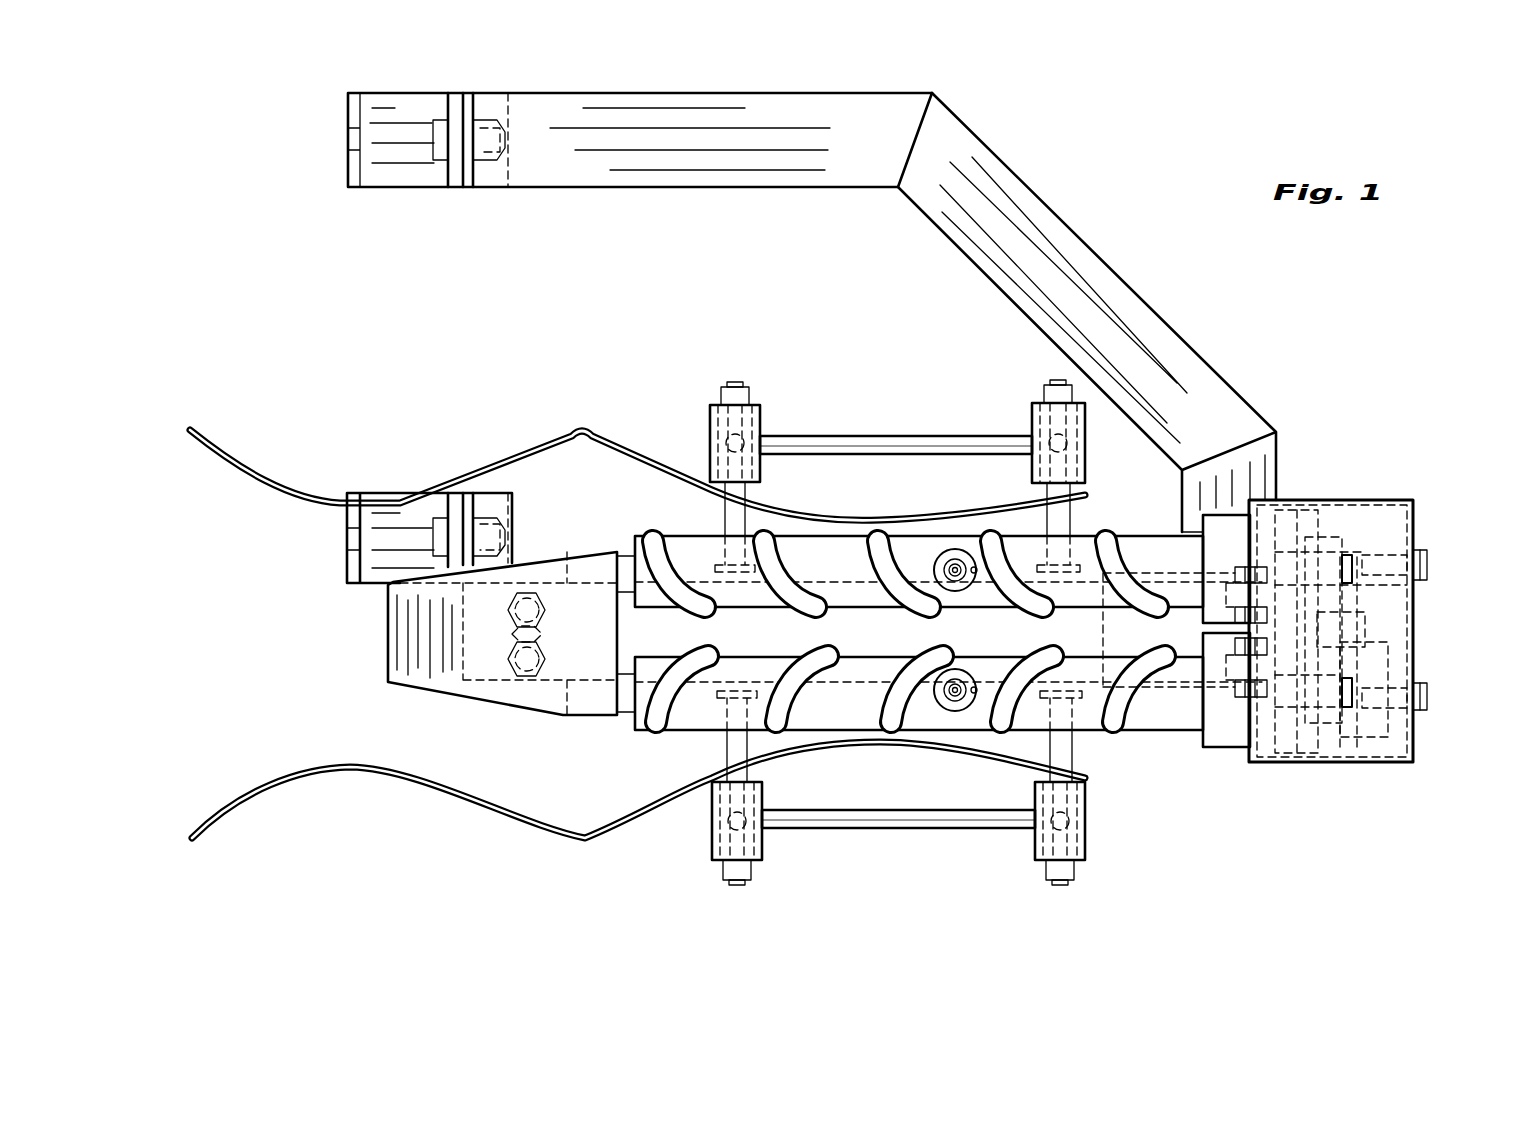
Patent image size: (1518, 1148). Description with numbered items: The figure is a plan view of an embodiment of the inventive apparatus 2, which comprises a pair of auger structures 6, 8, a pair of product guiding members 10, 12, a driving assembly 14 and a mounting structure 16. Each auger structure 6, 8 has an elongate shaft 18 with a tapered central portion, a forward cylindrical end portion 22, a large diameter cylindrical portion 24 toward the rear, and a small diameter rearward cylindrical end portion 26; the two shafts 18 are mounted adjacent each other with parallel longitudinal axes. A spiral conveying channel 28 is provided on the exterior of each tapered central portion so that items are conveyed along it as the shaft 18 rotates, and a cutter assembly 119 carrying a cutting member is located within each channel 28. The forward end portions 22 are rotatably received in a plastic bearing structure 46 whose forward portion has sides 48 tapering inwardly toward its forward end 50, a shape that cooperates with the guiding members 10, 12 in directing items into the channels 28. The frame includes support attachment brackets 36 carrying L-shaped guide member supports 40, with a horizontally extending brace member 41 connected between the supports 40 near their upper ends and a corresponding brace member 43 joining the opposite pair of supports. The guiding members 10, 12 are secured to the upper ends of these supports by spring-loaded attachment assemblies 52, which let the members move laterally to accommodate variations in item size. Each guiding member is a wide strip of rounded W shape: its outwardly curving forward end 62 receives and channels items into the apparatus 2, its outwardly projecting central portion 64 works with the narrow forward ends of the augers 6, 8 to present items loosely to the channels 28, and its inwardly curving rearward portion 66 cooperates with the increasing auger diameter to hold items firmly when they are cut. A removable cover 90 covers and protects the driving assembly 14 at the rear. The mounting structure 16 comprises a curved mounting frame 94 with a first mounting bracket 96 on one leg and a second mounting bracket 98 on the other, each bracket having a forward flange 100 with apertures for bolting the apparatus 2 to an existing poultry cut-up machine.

The inventive apparatus 2 is at (1215, 341).
The auger structure 6 is at (917, 637).
The auger structure 8 is at (700, 738).
The product guiding member 10 is at (266, 487).
The product guiding member 12 is at (352, 772).
The driving assembly 14 is at (1304, 641).
The mounting structure 16 is at (640, 176).
The elongate shaft 18 is at (917, 637).
The forward cylindrical end portion 22 is at (587, 567).
The large diameter cylindrical portion 24 is at (1228, 535).
The rearward cylindrical end portion 26 is at (1362, 560).
The spiral conveying channel 28 is at (830, 560).
The support attachment bracket 36 is at (705, 532).
The L-shaped guide member support 40 is at (1040, 528).
The horizontally extending brace member 41 is at (852, 440).
The horizontally extending brace member 43 is at (945, 831).
The plastic bearing structure 46 is at (444, 633).
The tapering sides 48 is at (442, 576).
The forward end 50 is at (392, 651).
The spring-loaded attachment assembly 52 is at (909, 618).
The outwardly curving forward end 62 is at (203, 431).
The outwardly projecting central portion 64 is at (583, 426).
The inwardly curving rearward portion 66 is at (908, 516).
The removable cover 90 is at (1363, 760).
The curved mounting frame 94 is at (1036, 193).
The first mounting bracket 96 is at (412, 190).
The second mounting bracket 98 is at (398, 516).
The forward flange 100 is at (349, 108).
The cutter assembly 119 is at (952, 553).